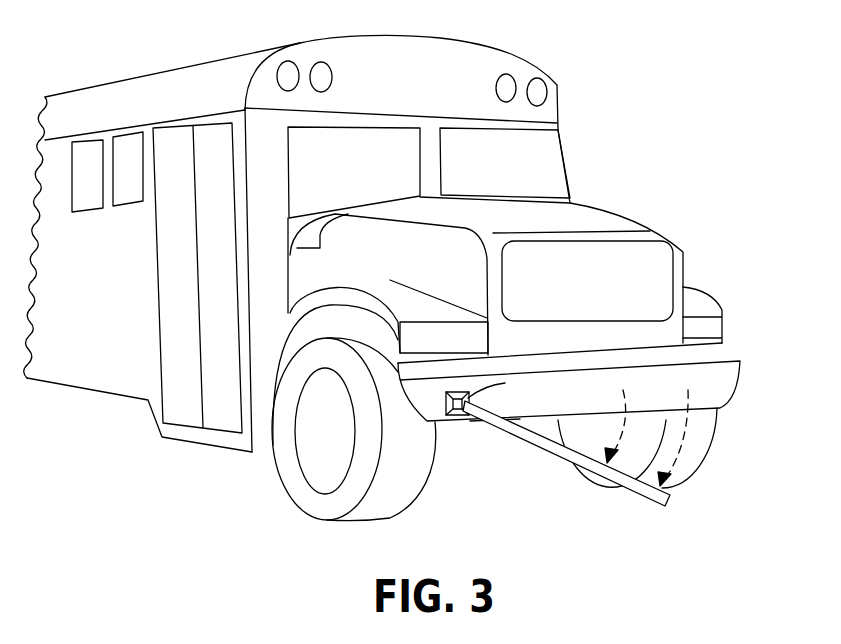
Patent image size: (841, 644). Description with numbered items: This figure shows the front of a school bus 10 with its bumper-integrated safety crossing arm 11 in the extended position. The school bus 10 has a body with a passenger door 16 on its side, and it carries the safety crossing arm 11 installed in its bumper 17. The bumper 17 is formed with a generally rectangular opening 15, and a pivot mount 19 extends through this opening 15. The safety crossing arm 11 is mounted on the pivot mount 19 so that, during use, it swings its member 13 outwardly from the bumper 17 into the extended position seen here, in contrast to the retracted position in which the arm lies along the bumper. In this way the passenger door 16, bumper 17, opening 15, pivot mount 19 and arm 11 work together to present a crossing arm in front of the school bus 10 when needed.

The school bus 10 is at (636, 137).
The safety crossing arm 11 is at (568, 462).
The swing member 13 is at (497, 422).
The rectangular opening 15 is at (462, 417).
The passenger door 16 is at (224, 407).
The bumper 17 is at (720, 385).
The pivot mount 19 is at (505, 383).